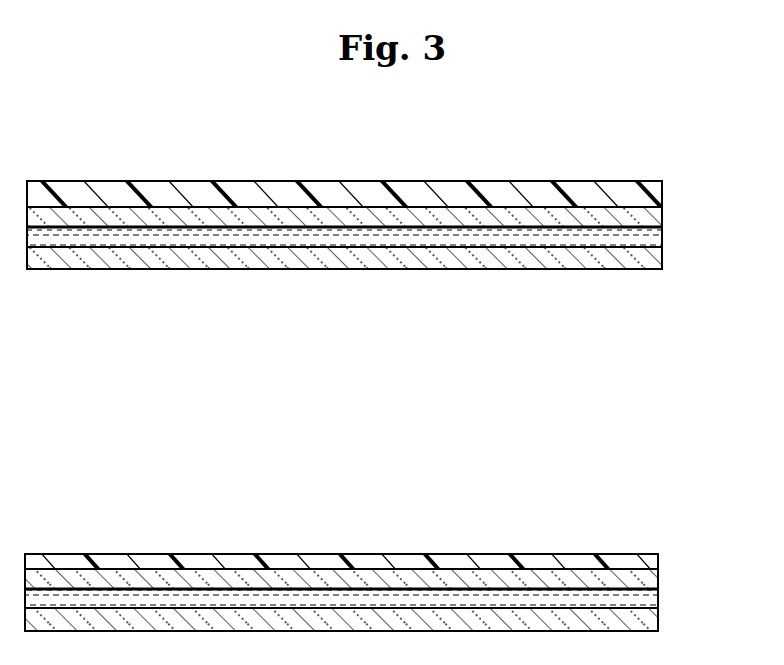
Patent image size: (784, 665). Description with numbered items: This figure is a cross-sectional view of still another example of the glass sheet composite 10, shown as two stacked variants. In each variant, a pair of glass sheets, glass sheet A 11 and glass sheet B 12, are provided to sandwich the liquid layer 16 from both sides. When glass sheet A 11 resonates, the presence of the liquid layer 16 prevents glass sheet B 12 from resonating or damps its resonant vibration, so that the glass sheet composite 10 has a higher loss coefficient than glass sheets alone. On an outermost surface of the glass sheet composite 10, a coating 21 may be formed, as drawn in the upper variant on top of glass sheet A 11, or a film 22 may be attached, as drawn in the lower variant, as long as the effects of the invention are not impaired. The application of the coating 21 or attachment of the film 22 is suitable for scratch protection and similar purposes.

The glass sheet composite 10 is at (552, 156).
The glass sheet A 11 is at (662, 216).
The glass sheet B 12 is at (662, 262).
The liquid layer 16 is at (662, 238).
The coating 21 is at (662, 190).
The film 22 is at (658, 560).